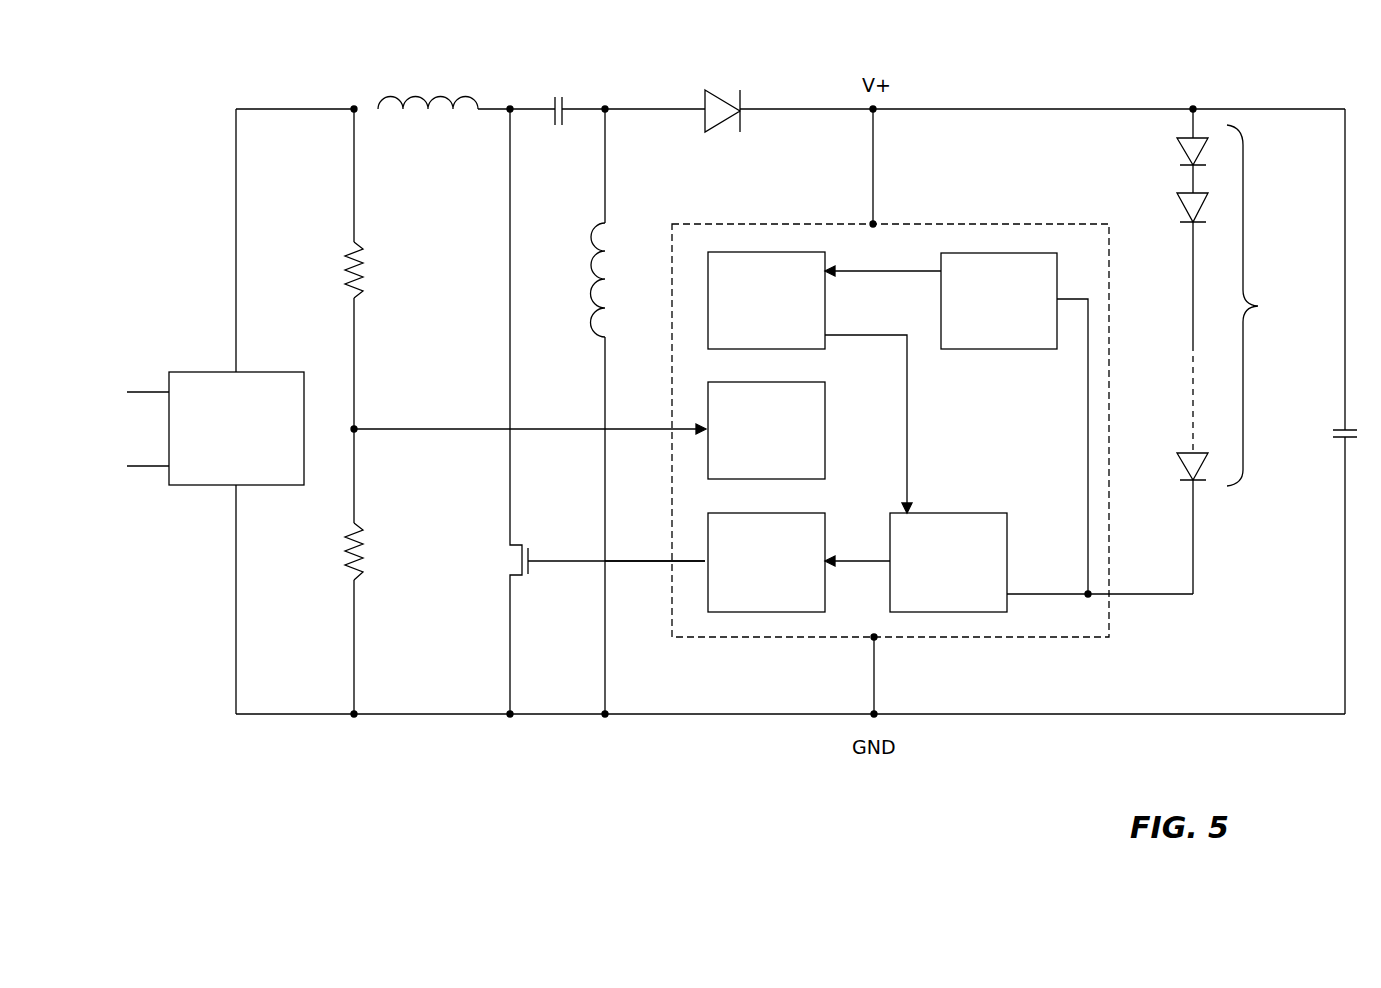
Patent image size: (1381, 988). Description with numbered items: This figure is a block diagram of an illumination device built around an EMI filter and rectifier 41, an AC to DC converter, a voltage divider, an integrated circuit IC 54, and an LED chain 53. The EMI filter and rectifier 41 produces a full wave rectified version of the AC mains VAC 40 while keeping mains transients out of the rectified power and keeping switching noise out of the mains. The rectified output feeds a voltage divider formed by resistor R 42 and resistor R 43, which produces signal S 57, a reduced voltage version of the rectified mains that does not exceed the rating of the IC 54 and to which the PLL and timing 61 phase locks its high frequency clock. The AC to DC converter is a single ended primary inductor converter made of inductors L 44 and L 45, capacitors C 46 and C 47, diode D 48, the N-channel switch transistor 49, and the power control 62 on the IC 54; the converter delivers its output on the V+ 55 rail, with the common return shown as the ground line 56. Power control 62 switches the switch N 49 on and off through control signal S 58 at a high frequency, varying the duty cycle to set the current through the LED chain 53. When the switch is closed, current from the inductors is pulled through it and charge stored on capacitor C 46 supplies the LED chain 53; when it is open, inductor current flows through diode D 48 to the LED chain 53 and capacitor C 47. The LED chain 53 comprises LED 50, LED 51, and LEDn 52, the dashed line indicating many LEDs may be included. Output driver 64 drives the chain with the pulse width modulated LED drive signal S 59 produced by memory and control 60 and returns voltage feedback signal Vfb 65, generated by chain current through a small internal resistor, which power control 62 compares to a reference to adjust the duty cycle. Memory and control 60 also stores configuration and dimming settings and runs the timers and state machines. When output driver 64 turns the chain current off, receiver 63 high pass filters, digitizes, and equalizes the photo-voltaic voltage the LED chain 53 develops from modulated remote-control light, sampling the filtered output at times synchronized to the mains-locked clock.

The AC mains VAC 40 is at (136, 429).
The EMI filter and rectifier 41 is at (281, 371).
The resistor R 42 is at (366, 266).
The resistor R 43 is at (366, 547).
The inductor L 44 is at (415, 90).
The inductor L 45 is at (608, 266).
The capacitor C 46 is at (557, 90).
The capacitor C 47 is at (1326, 432).
The diode D 48 is at (716, 78).
The N-channel switch transistor 49 is at (510, 560).
The LED 50 is at (1178, 152).
The LED 51 is at (1178, 208).
The LEDn 52 is at (1178, 465).
The LED chain 53 is at (1260, 305).
The integrated circuit IC 54 is at (1010, 221).
The V+ 55 is at (977, 107).
The ground line 56 is at (1178, 712).
The signal S 57 is at (436, 426).
The control signal S 58 is at (639, 555).
The LED drive signal S 59 is at (1047, 593).
The memory and control 60 is at (826, 298).
The PLL and timing 61 is at (826, 430).
The power control 62 is at (826, 522).
The receiver 63 is at (1003, 351).
The output driver 64 is at (961, 509).
The voltage feedback signal Vfb 65 is at (866, 566).